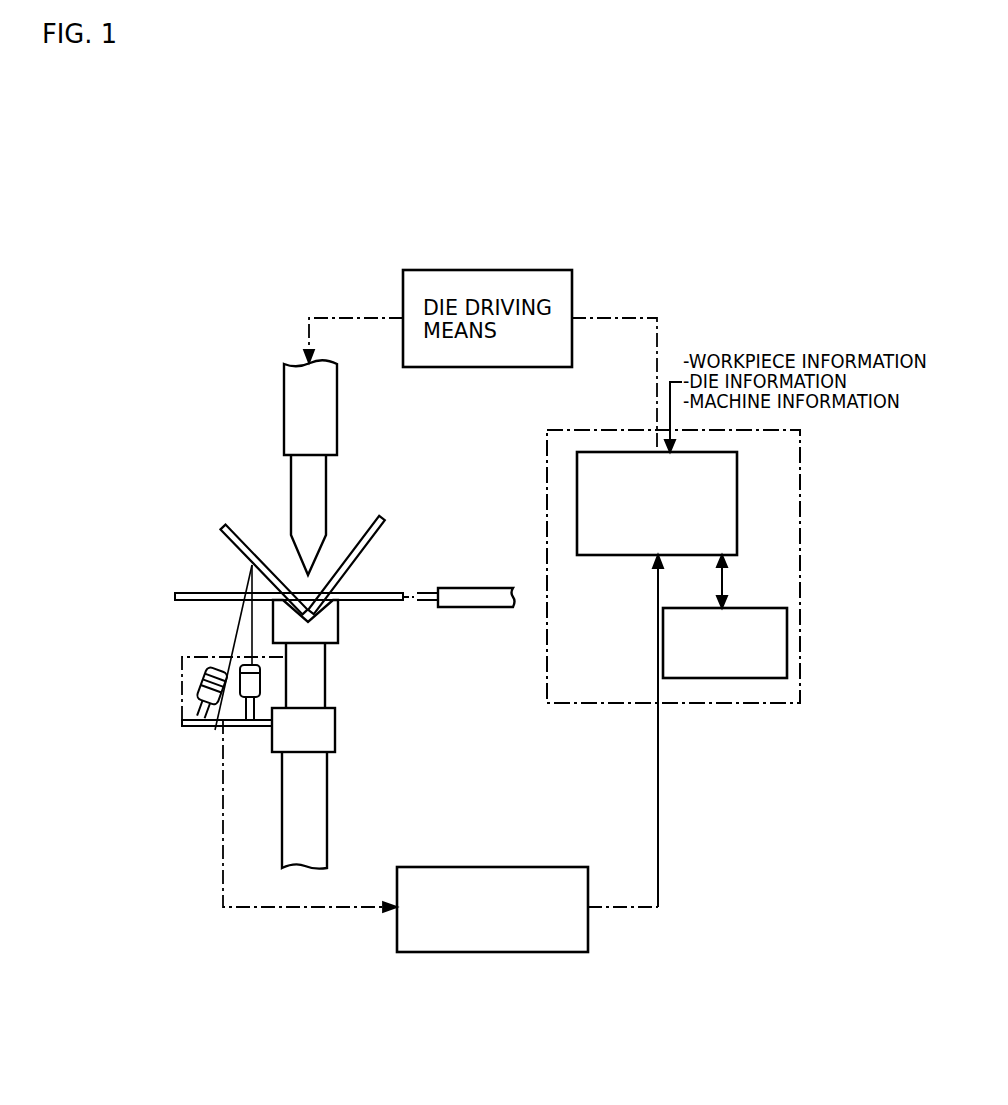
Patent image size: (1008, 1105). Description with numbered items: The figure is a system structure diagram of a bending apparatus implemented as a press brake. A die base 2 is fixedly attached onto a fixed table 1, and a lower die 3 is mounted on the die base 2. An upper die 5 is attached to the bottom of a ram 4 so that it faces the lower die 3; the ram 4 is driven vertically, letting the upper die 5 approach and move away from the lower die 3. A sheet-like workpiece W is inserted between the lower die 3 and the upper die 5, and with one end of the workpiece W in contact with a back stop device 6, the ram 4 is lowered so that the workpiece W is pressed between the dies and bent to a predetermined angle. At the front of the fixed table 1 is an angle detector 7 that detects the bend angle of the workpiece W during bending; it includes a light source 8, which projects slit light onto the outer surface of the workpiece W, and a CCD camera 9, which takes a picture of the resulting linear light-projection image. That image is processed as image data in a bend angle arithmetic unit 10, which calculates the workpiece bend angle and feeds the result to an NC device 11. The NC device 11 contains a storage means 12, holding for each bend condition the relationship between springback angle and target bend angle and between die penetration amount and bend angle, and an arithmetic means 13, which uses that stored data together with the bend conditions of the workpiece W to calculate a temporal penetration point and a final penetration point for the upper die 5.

The fixed table 1 is at (318, 797).
The die base 2 is at (315, 687).
The lower die 3 is at (330, 637).
The ram 4 is at (339, 419).
The upper die 5 is at (317, 510).
The back stop device 6 is at (488, 607).
The angle detector 7 is at (185, 655).
The light source 8 is at (235, 693).
The CCD camera 9 is at (195, 705).
The bend angle arithmetic unit 10 is at (397, 875).
The NC device 11 is at (713, 703).
The storage means 12 is at (787, 655).
The arithmetic means 13 is at (737, 512).
The workpiece W is at (383, 593).